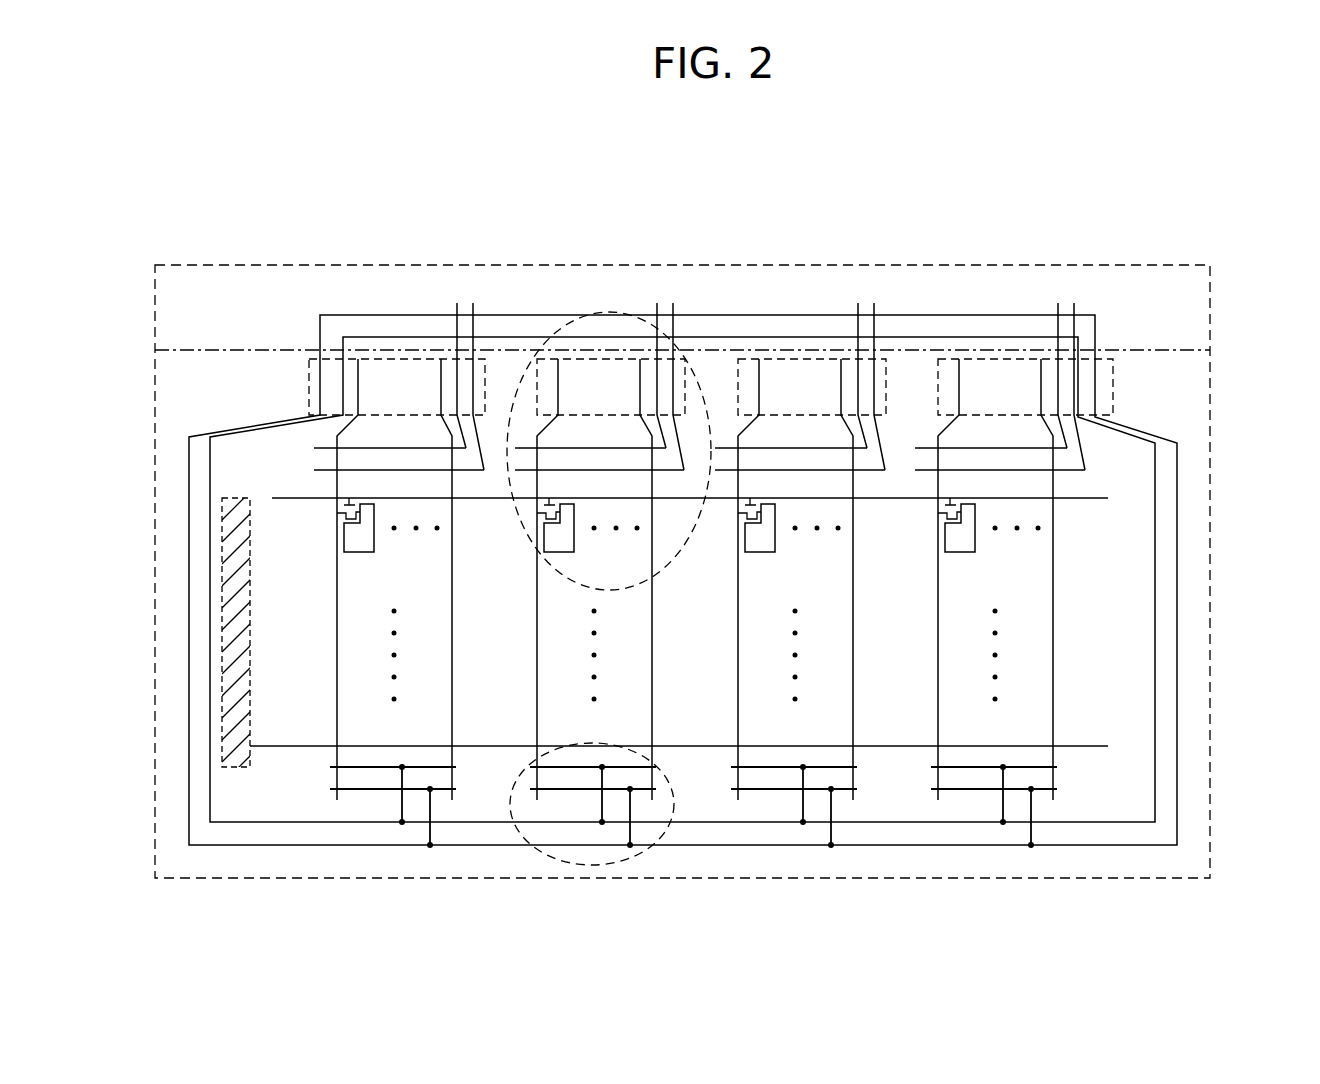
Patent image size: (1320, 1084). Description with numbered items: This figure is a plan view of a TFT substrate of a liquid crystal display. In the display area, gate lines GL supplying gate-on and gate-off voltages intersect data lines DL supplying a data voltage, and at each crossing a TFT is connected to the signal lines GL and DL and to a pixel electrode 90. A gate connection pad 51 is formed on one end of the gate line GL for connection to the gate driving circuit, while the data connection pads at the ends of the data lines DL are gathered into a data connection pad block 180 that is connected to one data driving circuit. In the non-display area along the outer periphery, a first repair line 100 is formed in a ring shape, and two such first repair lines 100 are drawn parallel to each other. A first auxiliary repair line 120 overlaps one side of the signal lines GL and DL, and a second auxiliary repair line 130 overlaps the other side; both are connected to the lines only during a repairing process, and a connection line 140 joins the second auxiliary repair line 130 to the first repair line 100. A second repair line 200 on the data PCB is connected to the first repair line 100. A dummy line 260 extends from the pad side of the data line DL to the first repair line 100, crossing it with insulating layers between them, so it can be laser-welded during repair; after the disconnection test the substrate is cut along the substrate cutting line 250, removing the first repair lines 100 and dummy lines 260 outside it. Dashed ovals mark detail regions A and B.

The first repair line 100 is at (1098, 850).
The second repair line 200 is at (996, 318).
The substrate cutting line 250 is at (1155, 352).
The dummy line 260 is at (1079, 328).
The first auxiliary repair line 120 is at (1087, 447).
The data connection pad block 180 is at (415, 358).
The pixel electrode 90 is at (343, 538).
The gate connection pad 51 is at (222, 633).
The second auxiliary repair line 130 is at (965, 793).
The connection line 140 is at (1013, 815).
The thin film transistor TFT is at (337, 508).
The data line DL is at (1053, 655).
The gate line GL is at (1032, 746).
The detail region A is at (609, 312).
The detail region B is at (592, 865).